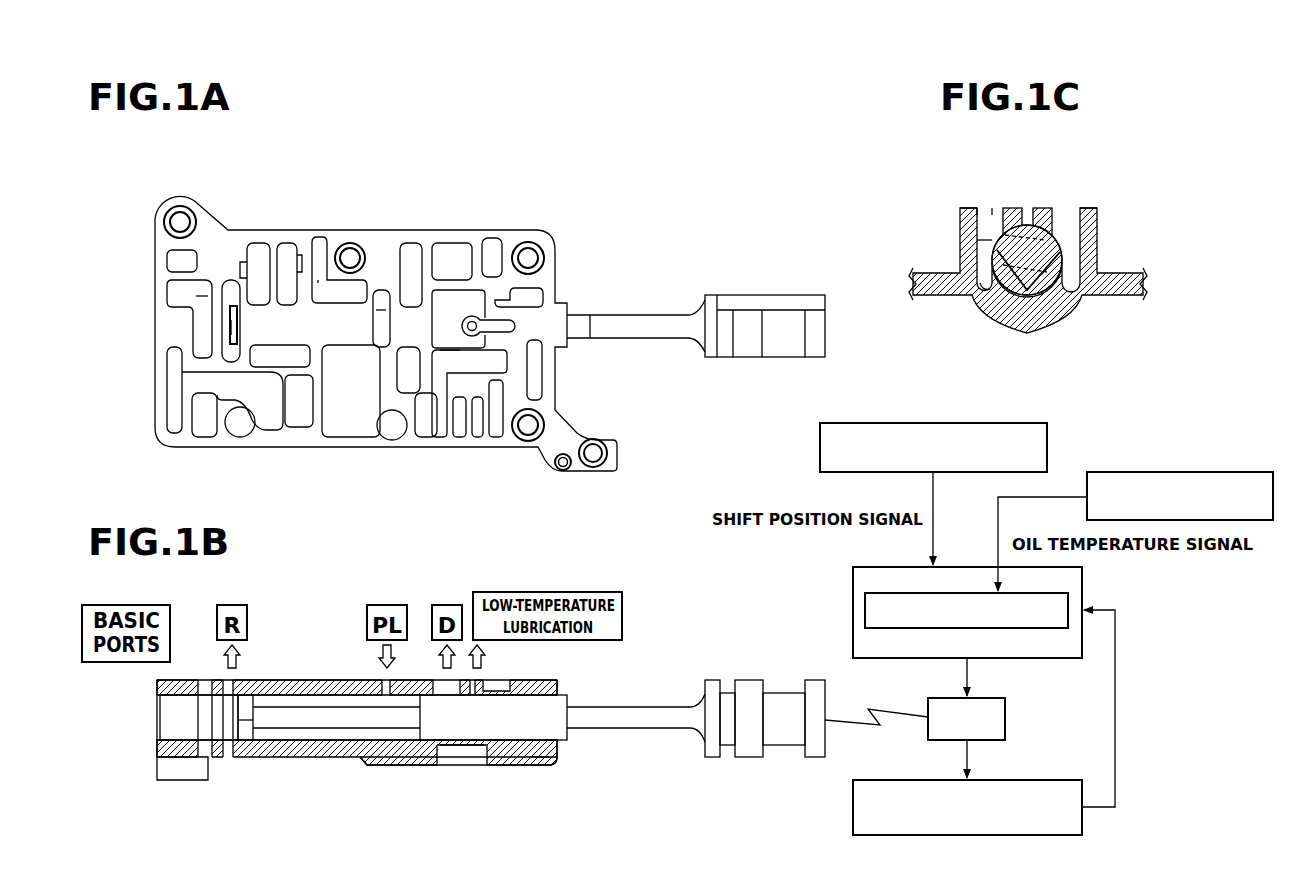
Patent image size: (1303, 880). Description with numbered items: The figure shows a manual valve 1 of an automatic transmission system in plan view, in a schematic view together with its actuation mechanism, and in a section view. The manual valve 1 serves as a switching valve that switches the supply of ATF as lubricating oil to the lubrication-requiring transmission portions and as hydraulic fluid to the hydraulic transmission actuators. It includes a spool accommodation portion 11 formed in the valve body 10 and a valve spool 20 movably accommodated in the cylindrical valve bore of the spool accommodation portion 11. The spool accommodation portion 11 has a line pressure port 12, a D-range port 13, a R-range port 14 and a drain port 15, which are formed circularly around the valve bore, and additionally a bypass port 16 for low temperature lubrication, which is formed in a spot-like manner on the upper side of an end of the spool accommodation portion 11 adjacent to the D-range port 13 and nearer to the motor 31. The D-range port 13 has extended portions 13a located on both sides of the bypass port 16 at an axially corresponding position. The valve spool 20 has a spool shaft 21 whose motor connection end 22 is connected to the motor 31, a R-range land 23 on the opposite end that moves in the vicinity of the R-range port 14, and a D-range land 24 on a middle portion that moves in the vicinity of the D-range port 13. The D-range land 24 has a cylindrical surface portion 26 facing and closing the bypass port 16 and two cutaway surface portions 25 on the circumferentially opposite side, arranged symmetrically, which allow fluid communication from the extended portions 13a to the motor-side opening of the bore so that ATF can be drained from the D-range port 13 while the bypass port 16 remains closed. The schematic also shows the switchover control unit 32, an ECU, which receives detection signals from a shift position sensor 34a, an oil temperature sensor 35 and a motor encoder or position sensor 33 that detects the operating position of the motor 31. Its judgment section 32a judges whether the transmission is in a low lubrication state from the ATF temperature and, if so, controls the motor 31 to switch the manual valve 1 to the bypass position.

In FIG. 1A, the manual valve 1 is at (562, 200).
In FIG. 1A, the valve body 10 is at (277, 228).
In FIG. 1C, the valve body 10 is at (1125, 282).
In FIG. 1A, the spool accommodation portion 11 is at (318, 280).
In FIG. 1B, the spool accommodation portion 11 is at (305, 680).
In FIG. 1C, the spool accommodation portion 11 is at (1097, 240).
In FIG. 1A, the line pressure port 12 is at (380, 313).
In FIG. 1B, the line pressure port 12 is at (385, 688).
In FIG. 1A, the D-range port 13 is at (450, 295).
In FIG. 1B, the D-range port 13 is at (443, 688).
In FIG. 1C, the D-range port 13 is at (992, 212).
In FIG. 1B, the extended portions 13a is at (467, 750).
In FIG. 1C, the extended portions 13a is at (988, 286).
In FIG. 1A, the R-range port 14 is at (228, 293).
In FIG. 1B, the R-range port 14 is at (232, 682).
In FIG. 1A, the drain port 15 is at (203, 310).
In FIG. 1B, the drain port 15 is at (203, 680).
In FIG. 1A, the bypass port 16 is at (472, 325).
In FIG. 1B, the bypass port 16 is at (485, 687).
In FIG. 1C, the bypass port 16 is at (1028, 215).
In FIG. 1A, the valve spool 20 is at (648, 305).
In FIG. 1B, the valve spool 20 is at (648, 698).
In FIG. 1C, the valve spool 20 is at (1052, 247).
In FIG. 1A, the spool shaft 21 is at (645, 338).
In FIG. 1B, the spool shaft 21 is at (648, 728).
In FIG. 1A, the motor connection end 22 is at (783, 297).
In FIG. 1B, the motor connection end 22 is at (785, 695).
In FIG. 1A, the R-range land 23 is at (230, 327).
In FIG. 1B, the R-range land 23 is at (245, 735).
In FIG. 1A, the D-range land 24 is at (450, 343).
In FIG. 1B, the D-range land 24 is at (513, 725).
In FIG. 1B, the cutaway surface portions 25 is at (542, 752).
In FIG. 1C, the cutaway surface portions 25 is at (1043, 278).
In FIG. 1C, the cylindrical surface portion 26 is at (985, 242).
In FIG. 1B, the motor 31 is at (1005, 720).
In FIG. 1B, the switchover control unit 32 is at (853, 586).
In FIG. 1B, the judgment section 32a is at (865, 611).
In FIG. 1B, the motor encoder or position sensor 33 is at (853, 808).
In FIG. 1B, the shift position sensor 34a is at (820, 447).
In FIG. 1B, the oil temperature sensor 35 is at (1180, 472).